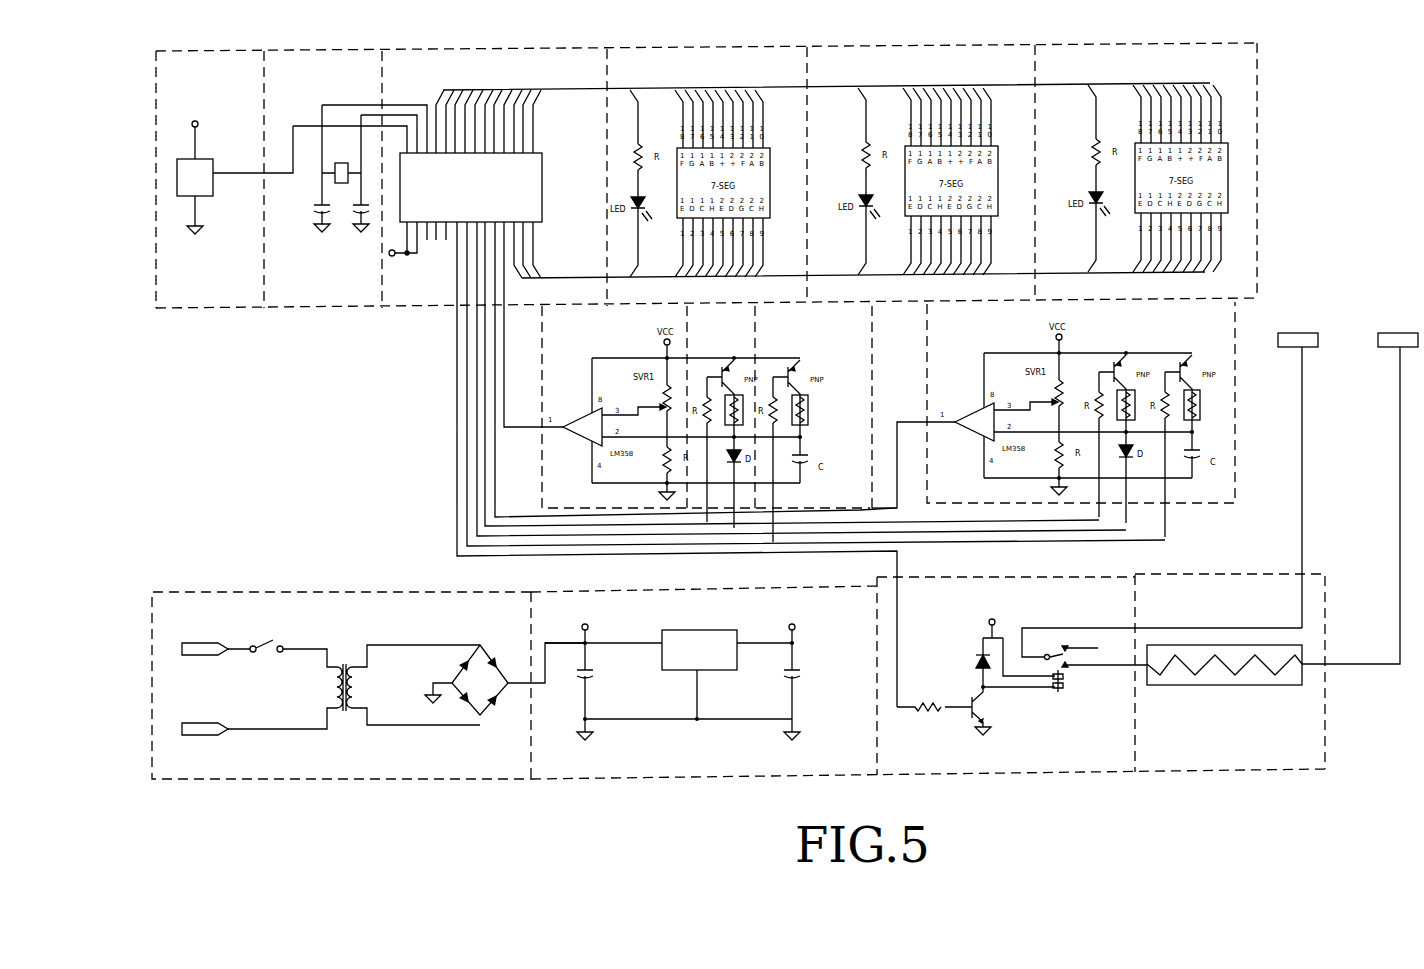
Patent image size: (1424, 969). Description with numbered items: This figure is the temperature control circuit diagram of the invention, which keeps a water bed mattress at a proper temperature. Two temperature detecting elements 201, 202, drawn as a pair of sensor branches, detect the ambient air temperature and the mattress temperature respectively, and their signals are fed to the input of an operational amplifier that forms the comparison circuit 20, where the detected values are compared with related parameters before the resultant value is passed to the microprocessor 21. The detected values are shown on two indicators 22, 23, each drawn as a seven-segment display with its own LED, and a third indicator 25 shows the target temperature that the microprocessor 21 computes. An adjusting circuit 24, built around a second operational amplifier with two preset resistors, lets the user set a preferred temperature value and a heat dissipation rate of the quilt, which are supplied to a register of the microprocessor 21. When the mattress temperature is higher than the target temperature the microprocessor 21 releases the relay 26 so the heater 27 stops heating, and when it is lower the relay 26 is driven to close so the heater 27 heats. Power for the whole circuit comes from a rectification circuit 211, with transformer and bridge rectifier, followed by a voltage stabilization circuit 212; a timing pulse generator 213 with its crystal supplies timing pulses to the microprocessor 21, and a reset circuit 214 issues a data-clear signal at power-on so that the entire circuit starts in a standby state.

The comparison circuit 20 is at (553, 487).
The microprocessor 21 is at (500, 62).
The indicator 22 is at (756, 60).
The indicator 23 is at (910, 60).
The adjusting circuit 24 is at (1220, 444).
The indicator 25 is at (1091, 57).
The relay 26 is at (1027, 752).
The heater 27 is at (1230, 750).
The temperature detecting element 201 is at (697, 500).
The temperature detecting element 202 is at (850, 494).
The rectification circuit 211 is at (443, 762).
The voltage stabilization circuit 212 is at (715, 757).
The timing pulse generator 213 is at (346, 64).
The reset circuit 214 is at (222, 64).